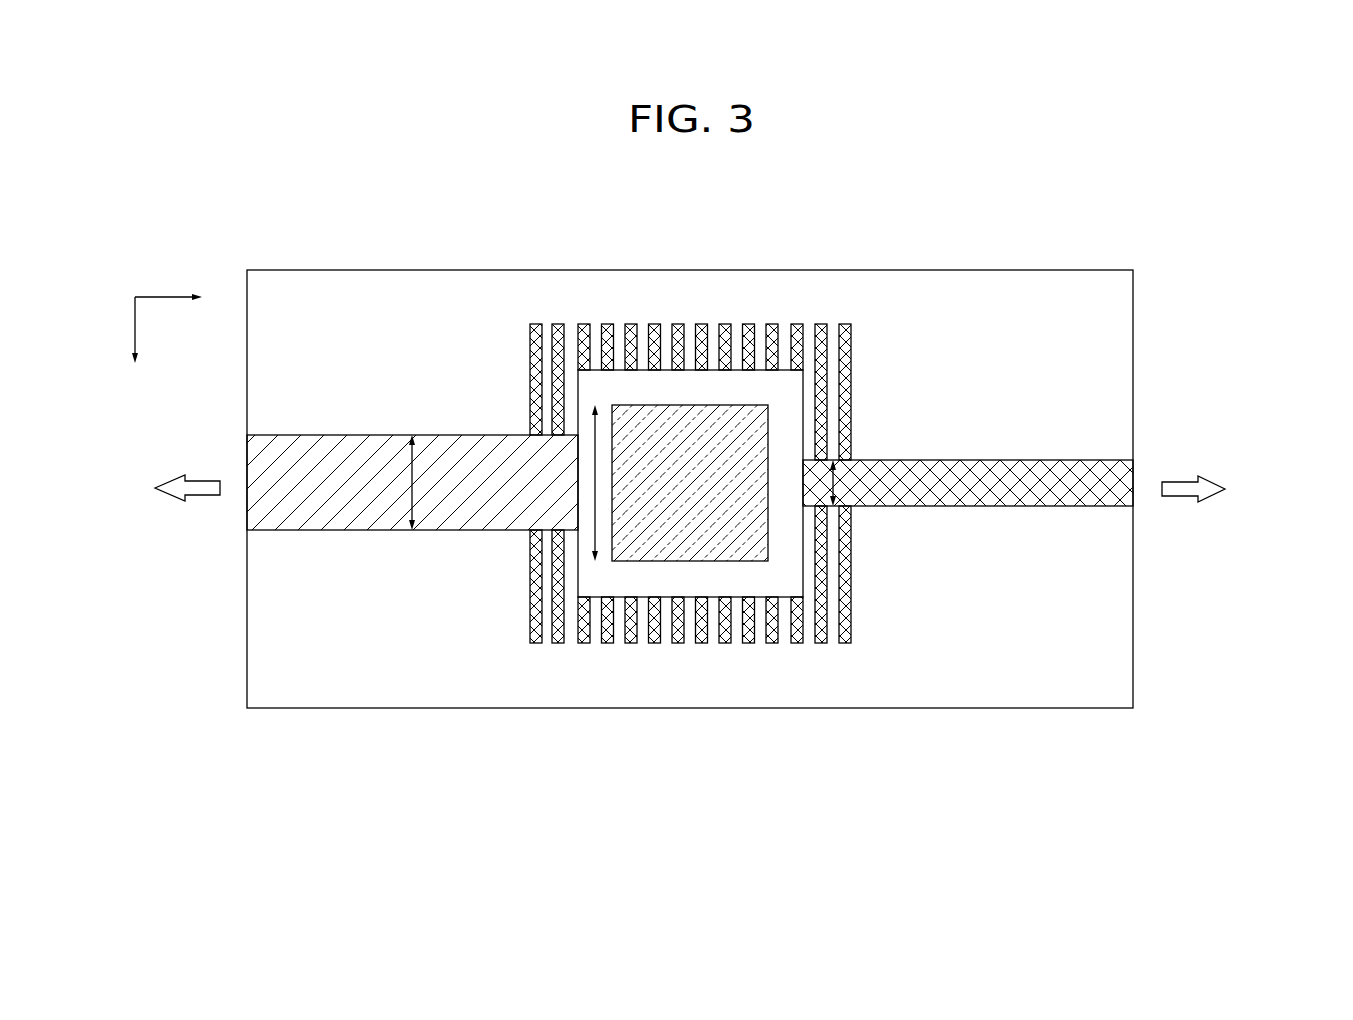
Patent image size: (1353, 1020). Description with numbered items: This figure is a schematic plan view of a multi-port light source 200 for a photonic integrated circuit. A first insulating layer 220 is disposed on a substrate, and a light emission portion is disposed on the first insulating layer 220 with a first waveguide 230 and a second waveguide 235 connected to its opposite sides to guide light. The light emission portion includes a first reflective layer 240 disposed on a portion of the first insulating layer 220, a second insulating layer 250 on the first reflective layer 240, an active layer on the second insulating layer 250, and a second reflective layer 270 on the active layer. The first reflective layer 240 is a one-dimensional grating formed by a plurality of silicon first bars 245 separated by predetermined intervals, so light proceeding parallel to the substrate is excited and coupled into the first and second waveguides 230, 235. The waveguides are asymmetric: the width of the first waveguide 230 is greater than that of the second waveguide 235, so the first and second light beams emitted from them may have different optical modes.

The multi-port light source 200 is at (1064, 239).
The first insulating layer 220 is at (1133, 350).
The first waveguide 230 is at (247, 458).
The second waveguide 235 is at (1133, 460).
The first reflective layer 240 is at (845, 652).
The first bars 245 is at (586, 325).
The second insulating layer 250 is at (762, 370).
The second reflective layer 270 is at (690, 405).